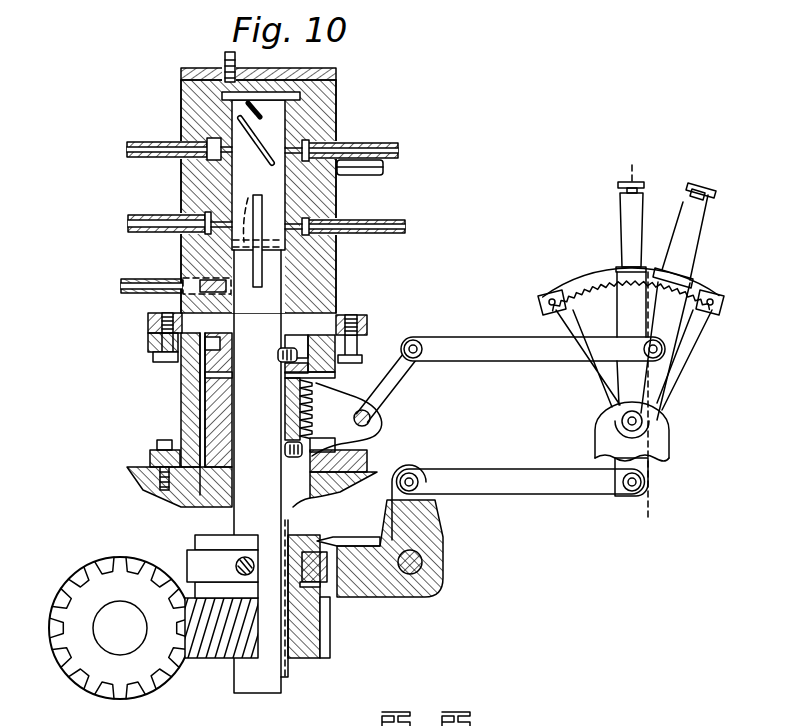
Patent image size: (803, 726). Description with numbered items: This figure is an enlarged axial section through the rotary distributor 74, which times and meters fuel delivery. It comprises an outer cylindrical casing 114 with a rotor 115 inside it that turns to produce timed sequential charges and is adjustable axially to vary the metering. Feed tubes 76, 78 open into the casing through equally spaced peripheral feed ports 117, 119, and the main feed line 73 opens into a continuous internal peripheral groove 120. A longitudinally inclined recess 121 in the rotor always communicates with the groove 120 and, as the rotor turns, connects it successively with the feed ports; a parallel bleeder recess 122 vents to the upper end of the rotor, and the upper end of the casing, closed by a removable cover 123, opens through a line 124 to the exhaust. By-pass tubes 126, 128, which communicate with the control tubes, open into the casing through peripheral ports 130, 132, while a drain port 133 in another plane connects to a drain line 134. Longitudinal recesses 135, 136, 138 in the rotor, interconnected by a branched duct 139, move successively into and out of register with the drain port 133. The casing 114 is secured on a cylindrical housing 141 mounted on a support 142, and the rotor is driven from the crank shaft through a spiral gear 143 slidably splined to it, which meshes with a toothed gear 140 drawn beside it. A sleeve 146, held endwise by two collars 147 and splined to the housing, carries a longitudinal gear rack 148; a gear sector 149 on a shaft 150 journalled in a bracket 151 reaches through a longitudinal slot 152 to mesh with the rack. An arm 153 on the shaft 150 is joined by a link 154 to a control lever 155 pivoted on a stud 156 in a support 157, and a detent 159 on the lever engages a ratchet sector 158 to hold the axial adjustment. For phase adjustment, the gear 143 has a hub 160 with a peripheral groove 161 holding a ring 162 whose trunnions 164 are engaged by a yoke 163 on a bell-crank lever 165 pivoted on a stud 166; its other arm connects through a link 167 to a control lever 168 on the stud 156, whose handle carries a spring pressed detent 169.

The main feed line 73 is at (370, 175).
The distributor 74 is at (140, 316).
The feed tube 76 is at (392, 158).
The feed tube 78 is at (165, 142).
The outer cylindrical casing 114 is at (338, 92).
The rotor 115 is at (290, 138).
The peripheral feed port 117 is at (322, 142).
The peripheral feed port 119 is at (232, 157).
The continuous peripheral groove 120 is at (292, 152).
The longitudinally inclined recess 121 is at (252, 142).
The bleeder recess 122 is at (263, 105).
The removable cover 123 is at (338, 74).
The exhaust line 124 is at (226, 58).
The by-pass tube 126 is at (388, 220).
The by-pass tube 128 is at (162, 216).
The peripheral port 130 is at (292, 220).
The peripheral port 132 is at (232, 225).
The drain port 133 is at (188, 292).
The drain line 134 is at (175, 279).
The longitudinal recess 135 is at (261, 471).
The longitudinal recess 136 is at (262, 288).
The longitudinal recess 138 is at (240, 280).
The branched duct 139 is at (256, 212).
The gear 140 is at (130, 680).
The cylindrical housing 141 is at (195, 378).
The support 142 is at (140, 480).
The spiral gear 143 is at (207, 660).
The sleeve 146 is at (215, 410).
The collar 147 is at (232, 352).
The longitudinal gear rack 148 is at (318, 378).
The gear sector 149 is at (372, 428).
The shaft 150 is at (372, 418).
The bracket 151 is at (345, 441).
The longitudinal slot 152 is at (330, 482).
The arm 153 is at (400, 378).
The link 154 is at (533, 363).
The control lever 155 is at (674, 320).
The stud 156 is at (645, 420).
The support 157 is at (670, 445).
The ratchet sector 158 is at (700, 284).
The spring-pressed detent 159 is at (707, 192).
The hub 160 is at (195, 541).
The peripheral groove 161 is at (308, 535).
The ring 162 is at (328, 585).
The yoke 163 is at (332, 537).
The trunnion 164 is at (236, 566).
The bell-crank lever 165 is at (428, 583).
The stud 166 is at (424, 562).
The link 167 is at (490, 495).
The control lever 168 is at (648, 468).
The spring pressed detent 169 is at (617, 186).